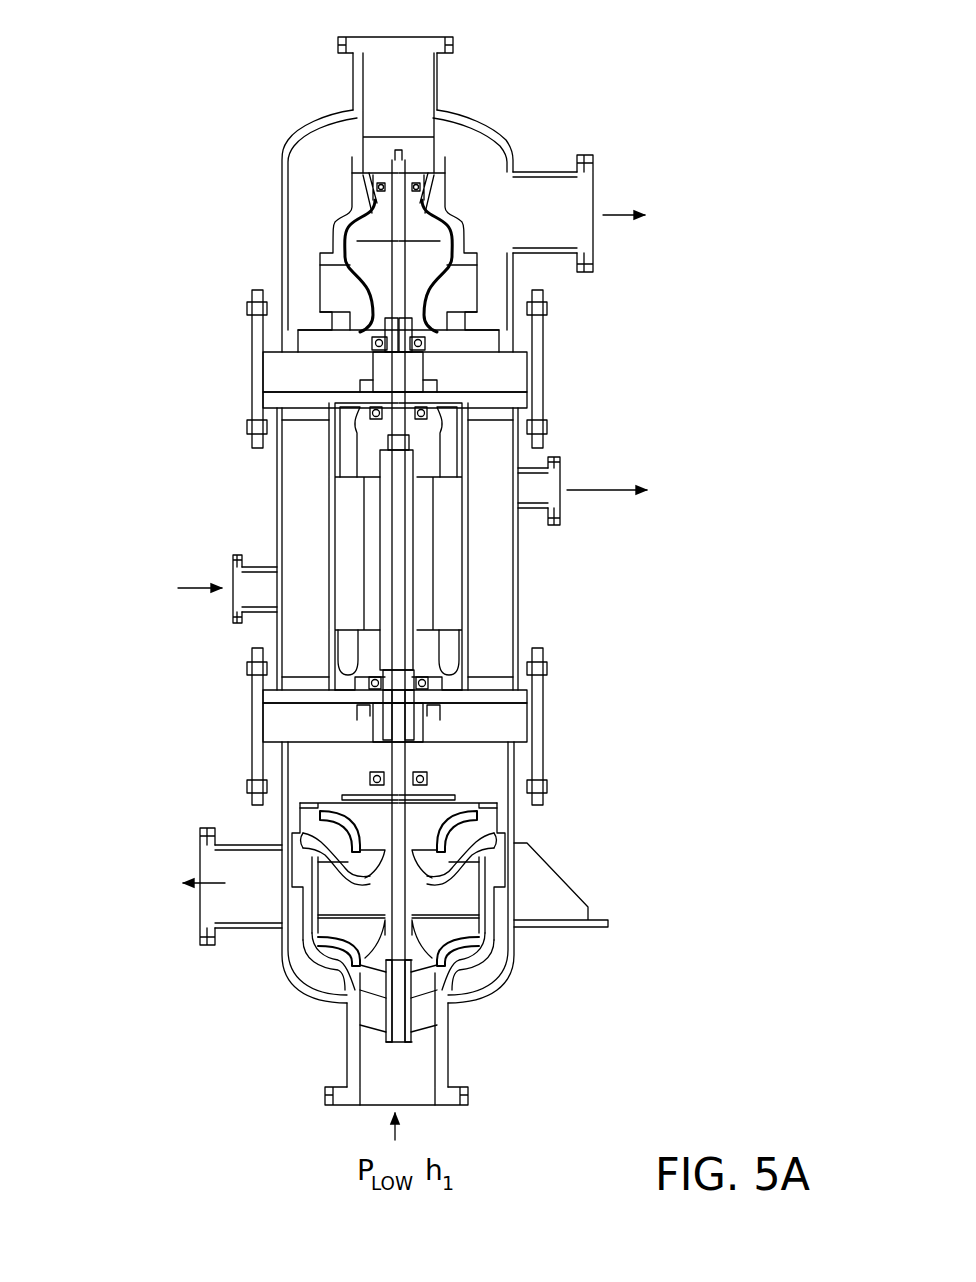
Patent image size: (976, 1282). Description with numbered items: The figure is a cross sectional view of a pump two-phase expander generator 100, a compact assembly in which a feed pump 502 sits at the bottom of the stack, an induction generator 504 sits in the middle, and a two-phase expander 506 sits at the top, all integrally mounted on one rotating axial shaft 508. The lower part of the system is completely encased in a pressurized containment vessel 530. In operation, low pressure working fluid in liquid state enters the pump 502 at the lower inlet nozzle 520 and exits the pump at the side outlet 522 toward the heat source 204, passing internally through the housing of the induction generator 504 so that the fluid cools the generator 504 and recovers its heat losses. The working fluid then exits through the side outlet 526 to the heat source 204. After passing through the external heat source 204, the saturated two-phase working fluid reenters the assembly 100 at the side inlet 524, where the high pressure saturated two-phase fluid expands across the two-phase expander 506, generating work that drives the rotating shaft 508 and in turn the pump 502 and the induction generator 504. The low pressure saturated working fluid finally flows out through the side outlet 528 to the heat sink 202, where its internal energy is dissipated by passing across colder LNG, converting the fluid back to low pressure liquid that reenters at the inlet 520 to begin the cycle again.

The pump two-phase expander generator 100 is at (150, 53).
The heat sink 202 is at (742, 265).
The heat source 204 is at (728, 570).
The feed pump 502 is at (510, 842).
The induction generator 504 is at (465, 570).
The two-phase expander 506 is at (473, 278).
The rotating shaft 508 is at (420, 612).
The lower inlet nozzle 520 is at (345, 1050).
The side outlet 522 is at (246, 927).
The side inlet 524 is at (262, 567).
The side outlet 526 is at (545, 467).
The side outlet 528 is at (547, 172).
The pressurized containment vessel 530 is at (520, 972).